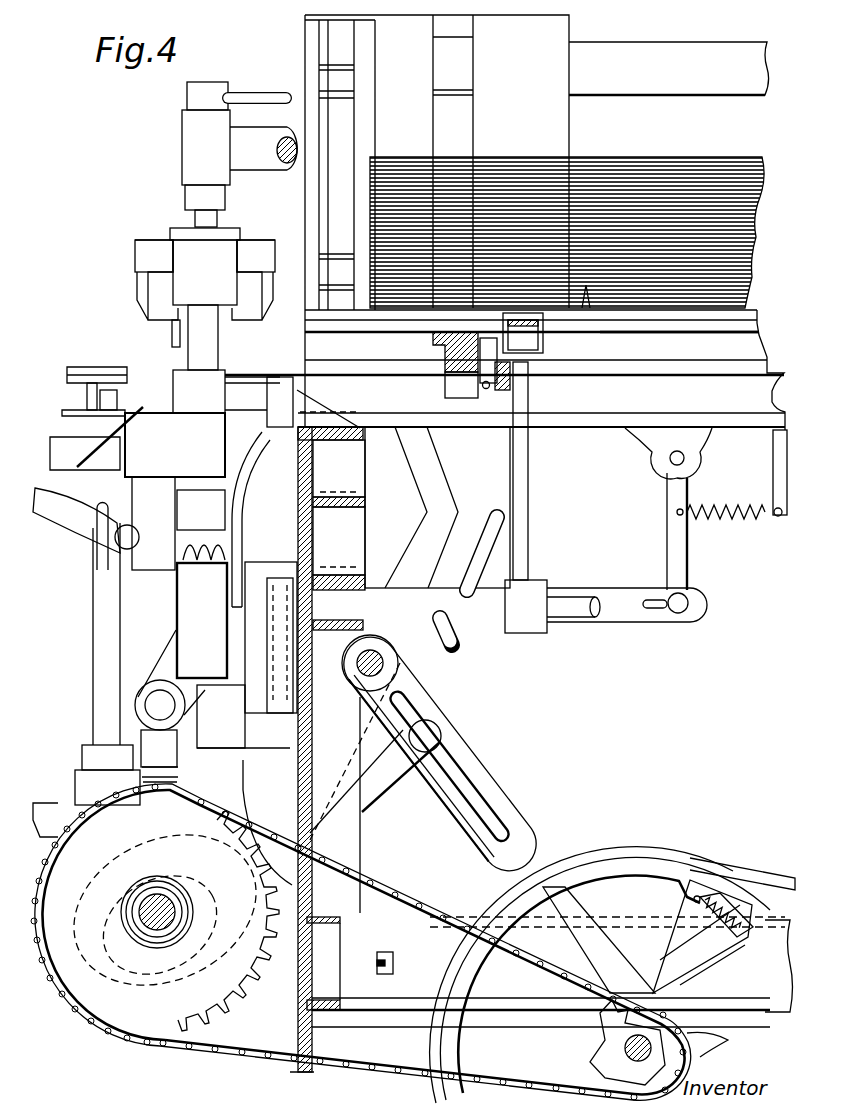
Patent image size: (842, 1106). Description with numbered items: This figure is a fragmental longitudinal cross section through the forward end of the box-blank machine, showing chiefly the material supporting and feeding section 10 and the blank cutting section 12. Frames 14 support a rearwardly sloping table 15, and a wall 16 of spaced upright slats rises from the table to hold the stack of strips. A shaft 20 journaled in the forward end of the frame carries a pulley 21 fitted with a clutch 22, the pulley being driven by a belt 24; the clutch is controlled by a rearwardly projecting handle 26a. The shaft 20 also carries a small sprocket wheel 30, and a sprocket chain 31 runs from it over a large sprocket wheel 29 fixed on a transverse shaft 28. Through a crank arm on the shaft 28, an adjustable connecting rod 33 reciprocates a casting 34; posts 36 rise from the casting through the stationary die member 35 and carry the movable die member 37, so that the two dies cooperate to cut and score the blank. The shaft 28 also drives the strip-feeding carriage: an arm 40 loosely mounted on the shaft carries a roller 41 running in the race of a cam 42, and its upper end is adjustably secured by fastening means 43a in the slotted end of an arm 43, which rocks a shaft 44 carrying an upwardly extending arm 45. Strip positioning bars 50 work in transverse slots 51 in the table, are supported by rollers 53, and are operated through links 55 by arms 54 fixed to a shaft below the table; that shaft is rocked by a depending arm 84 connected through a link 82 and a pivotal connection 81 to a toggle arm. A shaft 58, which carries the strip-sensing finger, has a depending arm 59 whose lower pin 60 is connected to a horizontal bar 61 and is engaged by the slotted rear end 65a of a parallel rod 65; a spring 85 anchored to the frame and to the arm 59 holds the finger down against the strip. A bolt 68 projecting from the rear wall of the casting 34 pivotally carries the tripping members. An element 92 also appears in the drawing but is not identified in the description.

The material supporting and feeding section 10 is at (742, 316).
The blank cutting section 12 is at (144, 223).
The frames 14 is at (365, 490).
The table 15 is at (662, 328).
The wall 16 is at (483, 12).
The shaft 20 is at (700, 1053).
The pulley 21 is at (718, 872).
The clutch 22 is at (615, 875).
The belt 24 is at (655, 848).
The handle 26a is at (500, 520).
The shaft 28 is at (148, 905).
The large sprocket wheel 29 is at (130, 1005).
The small sprocket wheel 30 is at (610, 1040).
The sprocket chain 31 is at (430, 905).
The adjustable connecting rod 33 is at (152, 745).
The casting 34 is at (211, 655).
The stationary die member 35 is at (196, 468).
The posts 36 is at (218, 345).
The movable die member 37 is at (205, 274).
The arm 40 is at (385, 780).
The roller 41 is at (228, 921).
The cam 42 is at (190, 980).
The arm 43 is at (498, 790).
The fastening means 43a is at (432, 735).
The shaft 44 is at (385, 665).
The upwardly extending arm 45 is at (440, 478).
The bars 50 is at (523, 333).
The slots 51 is at (545, 355).
The rollers 53 is at (445, 372).
The arms 54 is at (528, 470).
The links 55 is at (497, 389).
The shaft 58 is at (685, 458).
The depending arm 59 is at (668, 521).
The pin 60 is at (690, 605).
The horizontally disposed bar 61 is at (605, 590).
The rod 65 is at (590, 640).
The slotted rear end 65a is at (662, 624).
The bolt 68 is at (339, 515).
The pivotal connection 81 is at (240, 590).
The link 82 is at (265, 650).
The arm 84 is at (300, 706).
The spring 85 is at (748, 520).
The frame 92 is at (366, 118).